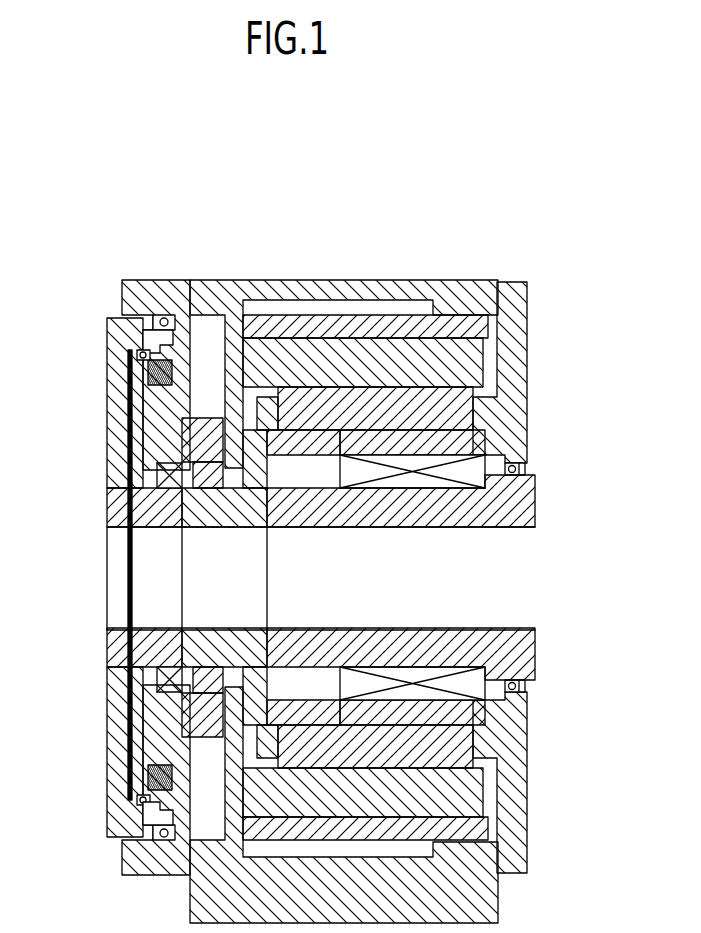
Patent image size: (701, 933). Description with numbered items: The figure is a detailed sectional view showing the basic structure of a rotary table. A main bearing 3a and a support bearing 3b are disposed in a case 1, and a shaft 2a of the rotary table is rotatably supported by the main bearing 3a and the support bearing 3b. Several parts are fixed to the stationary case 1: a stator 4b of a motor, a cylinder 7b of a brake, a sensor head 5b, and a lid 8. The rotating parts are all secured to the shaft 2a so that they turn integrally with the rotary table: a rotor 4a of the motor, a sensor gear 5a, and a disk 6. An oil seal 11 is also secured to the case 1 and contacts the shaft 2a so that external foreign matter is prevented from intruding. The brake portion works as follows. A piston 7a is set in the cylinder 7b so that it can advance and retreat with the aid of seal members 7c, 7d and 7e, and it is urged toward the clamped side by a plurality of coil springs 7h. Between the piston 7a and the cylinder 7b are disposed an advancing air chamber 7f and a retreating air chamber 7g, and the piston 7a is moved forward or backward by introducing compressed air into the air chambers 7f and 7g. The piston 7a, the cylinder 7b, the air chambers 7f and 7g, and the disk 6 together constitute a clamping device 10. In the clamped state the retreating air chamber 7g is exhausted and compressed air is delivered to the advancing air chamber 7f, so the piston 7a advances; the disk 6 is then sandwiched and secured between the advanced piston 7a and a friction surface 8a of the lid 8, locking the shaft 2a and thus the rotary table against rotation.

The case 1 is at (335, 282).
The shaft 2a is at (525, 654).
The main bearing 3a is at (470, 478).
The support bearing 3b is at (163, 679).
The rotor 4a is at (433, 385).
The stator 4b is at (385, 335).
The sensor gear 5a is at (200, 478).
The sensor head 5b is at (200, 450).
The disk 6 is at (150, 378).
The piston 7a is at (130, 326).
The cylinder 7b is at (155, 283).
The seal member 7c is at (155, 318).
The seal member 7d is at (160, 342).
The seal member 7e is at (150, 450).
The advancing air chamber 7f is at (180, 840).
The retreating air chamber 7g is at (150, 835).
The coil spring 7h is at (185, 392).
The lid 8 is at (118, 757).
The friction surface 8a is at (130, 797).
The clamping device 10 is at (182, 225).
The oil seal 11 is at (522, 470).